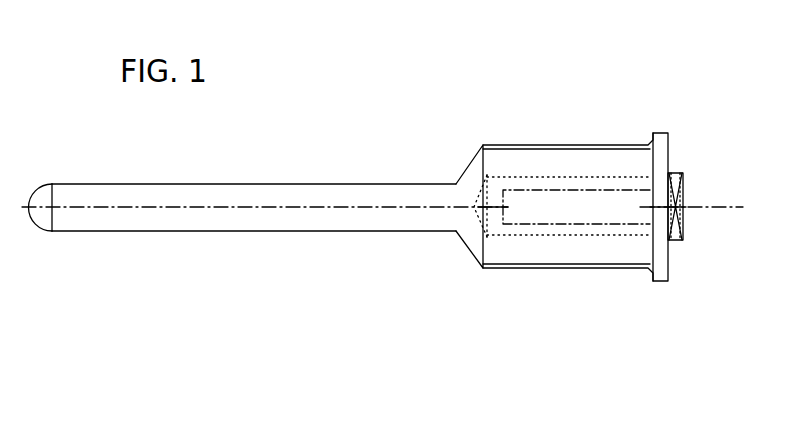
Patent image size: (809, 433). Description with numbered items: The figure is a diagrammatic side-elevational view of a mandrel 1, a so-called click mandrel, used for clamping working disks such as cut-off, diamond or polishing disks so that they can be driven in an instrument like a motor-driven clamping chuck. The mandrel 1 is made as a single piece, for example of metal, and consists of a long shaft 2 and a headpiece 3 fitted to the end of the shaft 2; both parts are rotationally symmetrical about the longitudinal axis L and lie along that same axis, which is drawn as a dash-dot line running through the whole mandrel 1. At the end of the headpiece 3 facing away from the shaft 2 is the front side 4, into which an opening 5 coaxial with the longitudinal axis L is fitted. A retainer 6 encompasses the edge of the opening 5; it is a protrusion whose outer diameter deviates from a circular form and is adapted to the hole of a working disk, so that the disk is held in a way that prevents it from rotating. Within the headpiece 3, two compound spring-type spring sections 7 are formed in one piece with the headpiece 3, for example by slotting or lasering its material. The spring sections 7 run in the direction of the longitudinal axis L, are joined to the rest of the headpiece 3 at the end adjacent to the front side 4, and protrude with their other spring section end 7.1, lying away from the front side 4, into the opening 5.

The mandrel 1 is at (375, 219).
The shaft 2 is at (167, 222).
The headpiece 3 is at (573, 253).
The front side 4 is at (668, 262).
The opening 5 is at (568, 176).
The retainer 6 is at (677, 203).
The spring sections 7 is at (557, 217).
The spring section end 7.1 is at (505, 207).
The longitudinal axis L is at (746, 201).